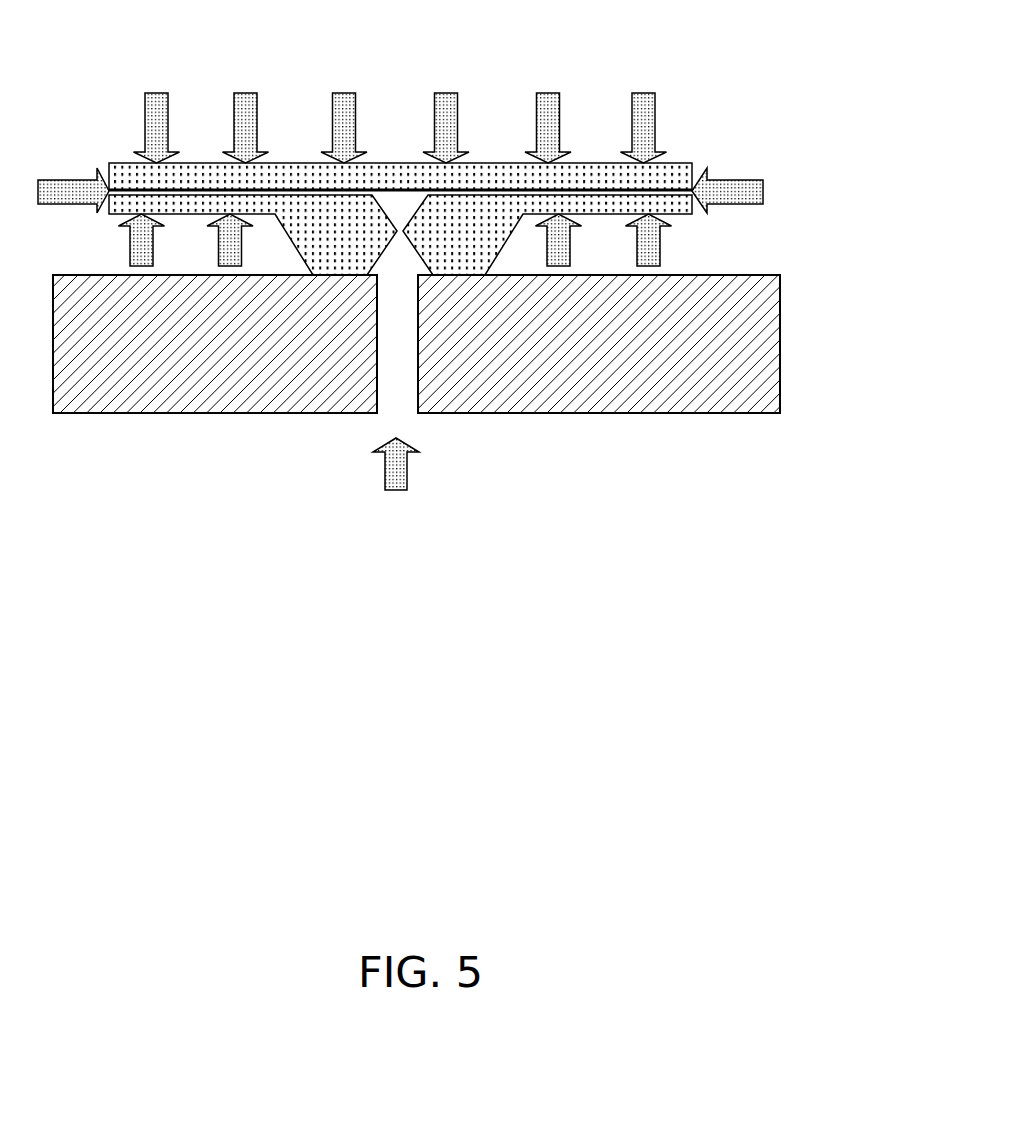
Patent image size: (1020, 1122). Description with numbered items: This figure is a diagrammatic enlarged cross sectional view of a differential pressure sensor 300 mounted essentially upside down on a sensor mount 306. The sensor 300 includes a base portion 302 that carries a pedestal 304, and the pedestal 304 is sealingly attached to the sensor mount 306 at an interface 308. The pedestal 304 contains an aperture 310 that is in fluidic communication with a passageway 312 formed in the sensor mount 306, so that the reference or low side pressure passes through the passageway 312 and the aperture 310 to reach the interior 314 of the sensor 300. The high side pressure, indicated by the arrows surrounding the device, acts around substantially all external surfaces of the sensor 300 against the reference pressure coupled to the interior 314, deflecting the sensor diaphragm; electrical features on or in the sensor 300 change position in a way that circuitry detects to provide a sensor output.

The differential pressure sensor 300 is at (484, 271).
The base portion 302 is at (471, 359).
The pedestal 304 is at (295, 248).
The sensor mount 306 is at (752, 318).
The interface 308 is at (483, 275).
The aperture 310 is at (397, 232).
The passageway 312 is at (398, 372).
The interior 314 is at (397, 197).